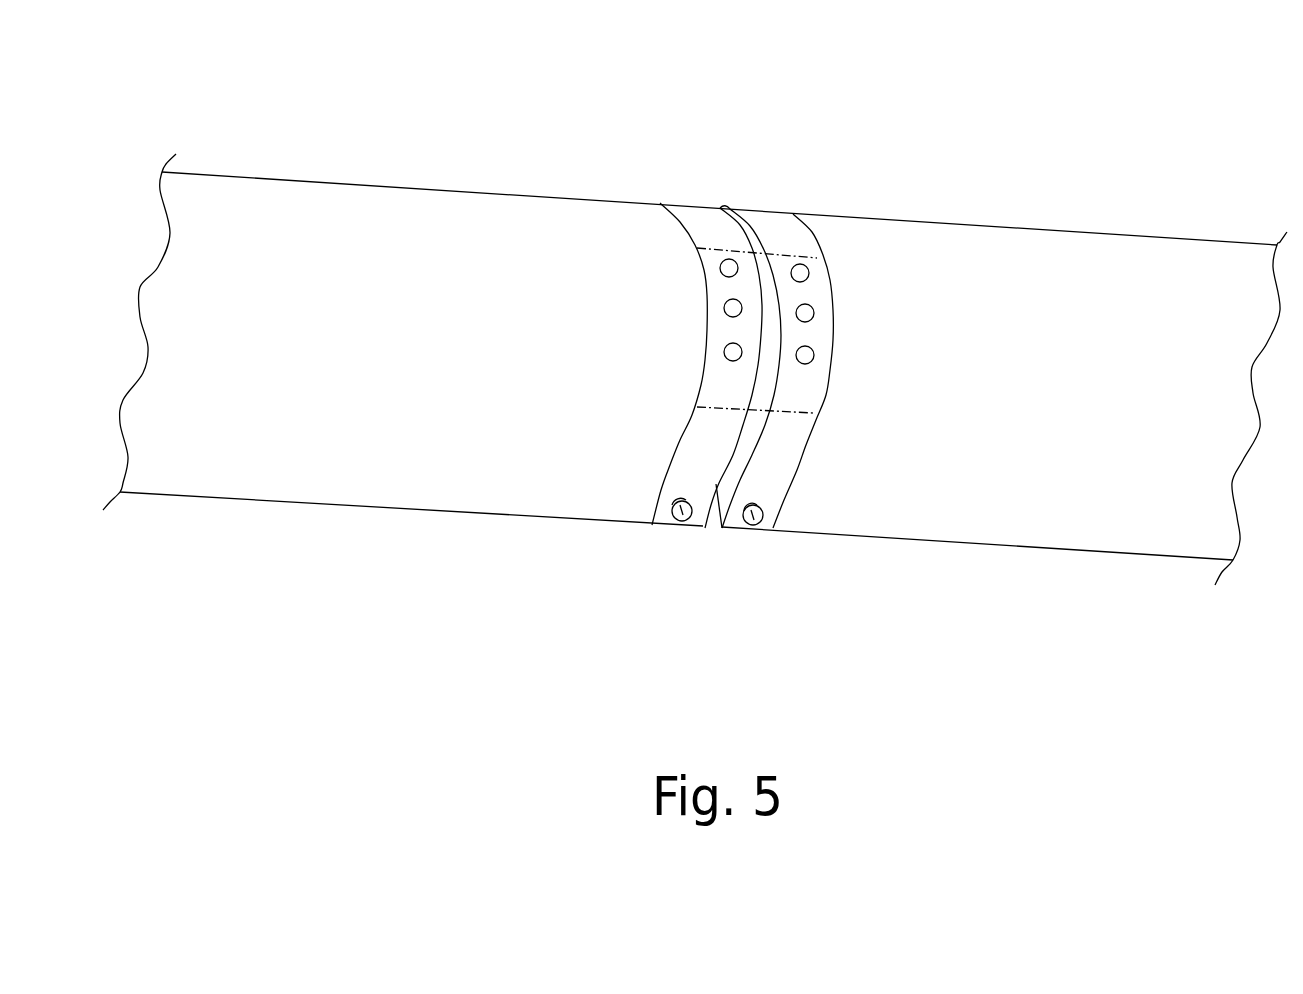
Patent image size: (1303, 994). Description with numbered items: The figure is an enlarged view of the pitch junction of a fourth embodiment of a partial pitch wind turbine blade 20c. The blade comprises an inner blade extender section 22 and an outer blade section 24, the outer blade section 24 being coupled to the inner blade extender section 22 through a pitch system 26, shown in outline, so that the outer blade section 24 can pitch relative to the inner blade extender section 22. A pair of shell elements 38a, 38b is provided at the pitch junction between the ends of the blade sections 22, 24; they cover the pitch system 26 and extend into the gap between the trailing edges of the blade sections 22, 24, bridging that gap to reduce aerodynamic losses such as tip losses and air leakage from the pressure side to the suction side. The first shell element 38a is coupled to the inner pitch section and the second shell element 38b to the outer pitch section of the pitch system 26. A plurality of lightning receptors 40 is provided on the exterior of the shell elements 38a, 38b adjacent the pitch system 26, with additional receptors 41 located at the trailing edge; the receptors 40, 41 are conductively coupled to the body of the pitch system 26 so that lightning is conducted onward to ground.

The wind turbine blade 20c is at (695, 349).
The inner blade extender section 22 is at (305, 467).
The outer blade section 24 is at (1073, 520).
The pitch system 26 is at (777, 252).
The first shell element 38a is at (677, 440).
The second shell element 38b is at (798, 470).
The lightning receptors 40 is at (724, 308).
The additional lightning receptors 41 is at (745, 530).